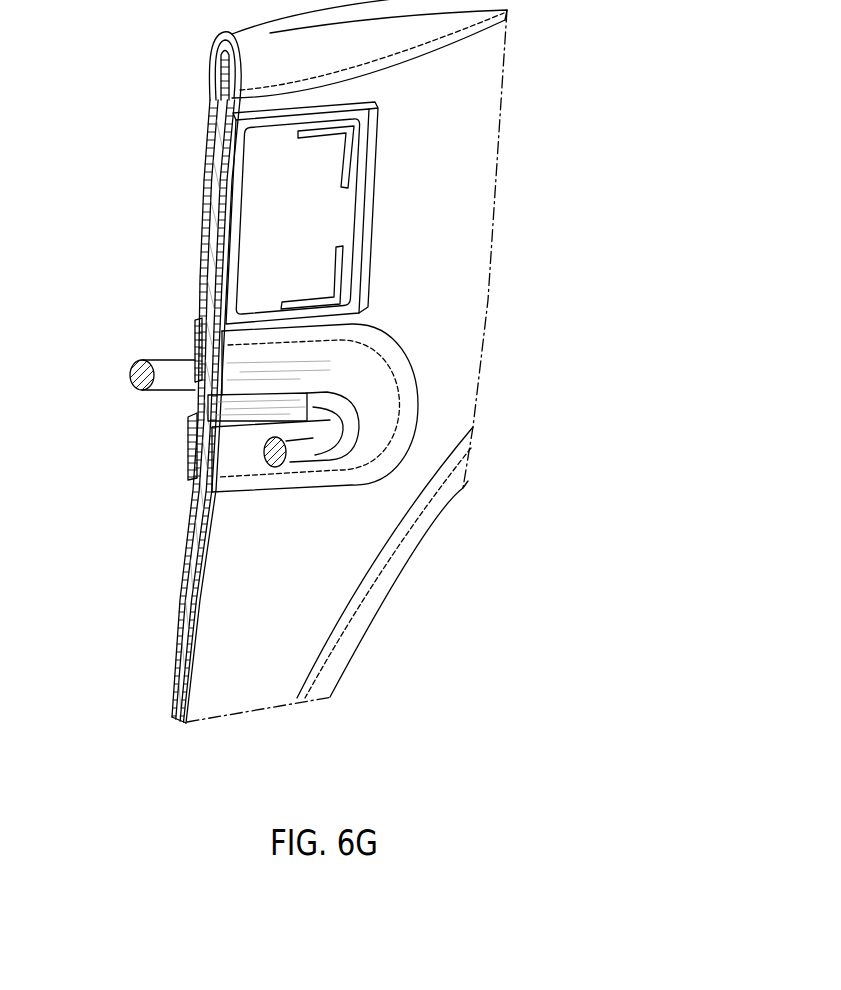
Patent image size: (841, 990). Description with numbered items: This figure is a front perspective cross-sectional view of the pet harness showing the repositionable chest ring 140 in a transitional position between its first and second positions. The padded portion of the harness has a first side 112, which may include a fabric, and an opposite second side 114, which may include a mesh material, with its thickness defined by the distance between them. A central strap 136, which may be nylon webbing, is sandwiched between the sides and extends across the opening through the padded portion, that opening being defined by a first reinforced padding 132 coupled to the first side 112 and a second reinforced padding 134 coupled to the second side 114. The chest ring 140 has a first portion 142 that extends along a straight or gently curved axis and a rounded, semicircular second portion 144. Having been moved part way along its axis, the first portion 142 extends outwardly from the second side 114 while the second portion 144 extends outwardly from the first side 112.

The first side 112 is at (295, 633).
The second side 114 is at (228, 50).
The first reinforced padding 132 is at (233, 457).
The second reinforced padding 134 is at (190, 455).
The central strap 136 is at (200, 272).
The chest ring 140 is at (162, 375).
The first portion 142 is at (175, 357).
The second portion 144 is at (313, 458).